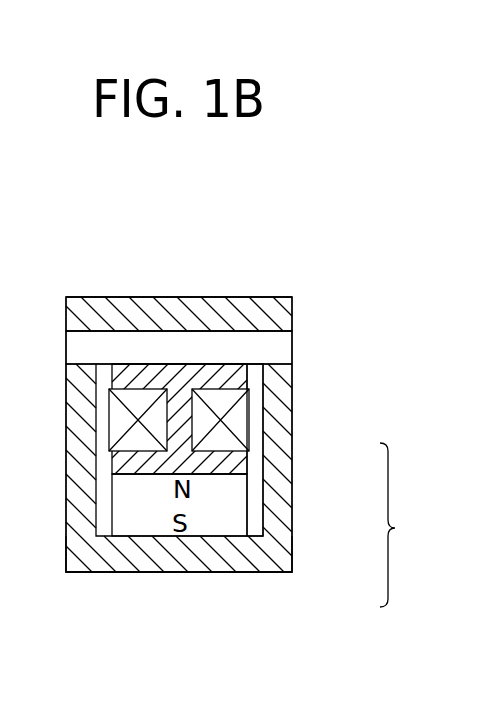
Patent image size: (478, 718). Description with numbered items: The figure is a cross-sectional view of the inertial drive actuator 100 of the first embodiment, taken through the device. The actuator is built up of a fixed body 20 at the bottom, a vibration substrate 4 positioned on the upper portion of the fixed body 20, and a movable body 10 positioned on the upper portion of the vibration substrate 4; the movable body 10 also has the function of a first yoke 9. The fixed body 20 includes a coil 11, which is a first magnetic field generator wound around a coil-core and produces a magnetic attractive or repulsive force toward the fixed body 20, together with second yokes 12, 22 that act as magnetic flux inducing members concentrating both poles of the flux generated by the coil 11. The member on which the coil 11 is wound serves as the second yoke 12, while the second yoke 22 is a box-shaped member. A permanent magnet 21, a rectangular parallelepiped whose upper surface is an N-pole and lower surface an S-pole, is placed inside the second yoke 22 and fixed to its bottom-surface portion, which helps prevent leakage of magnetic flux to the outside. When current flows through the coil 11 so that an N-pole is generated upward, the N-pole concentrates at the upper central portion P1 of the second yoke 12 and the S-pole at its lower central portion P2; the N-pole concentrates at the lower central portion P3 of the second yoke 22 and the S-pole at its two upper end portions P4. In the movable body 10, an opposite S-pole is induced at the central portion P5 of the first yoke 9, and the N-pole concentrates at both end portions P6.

The inertial drive actuator 100 is at (302, 220).
The first yoke 9 is at (247, 297).
The movable body 10 is at (161, 297).
The vibration substrate 4 is at (293, 347).
The coil 11 is at (243, 423).
The second yoke 12 is at (235, 460).
The permanent magnet 21 is at (250, 515).
The second yoke 22 is at (265, 572).
The fixed body 20 is at (407, 525).
The upper central portion of the second yoke P1 is at (185, 364).
The lower central portion of the second yoke P2 is at (165, 476).
The lower central portion of the second yoke P3 is at (196, 572).
The upper end portions of the second yoke P4 is at (67, 380).
The central portion of the first yoke P5 is at (168, 331).
The end portions of the movable body P6 is at (80, 297).